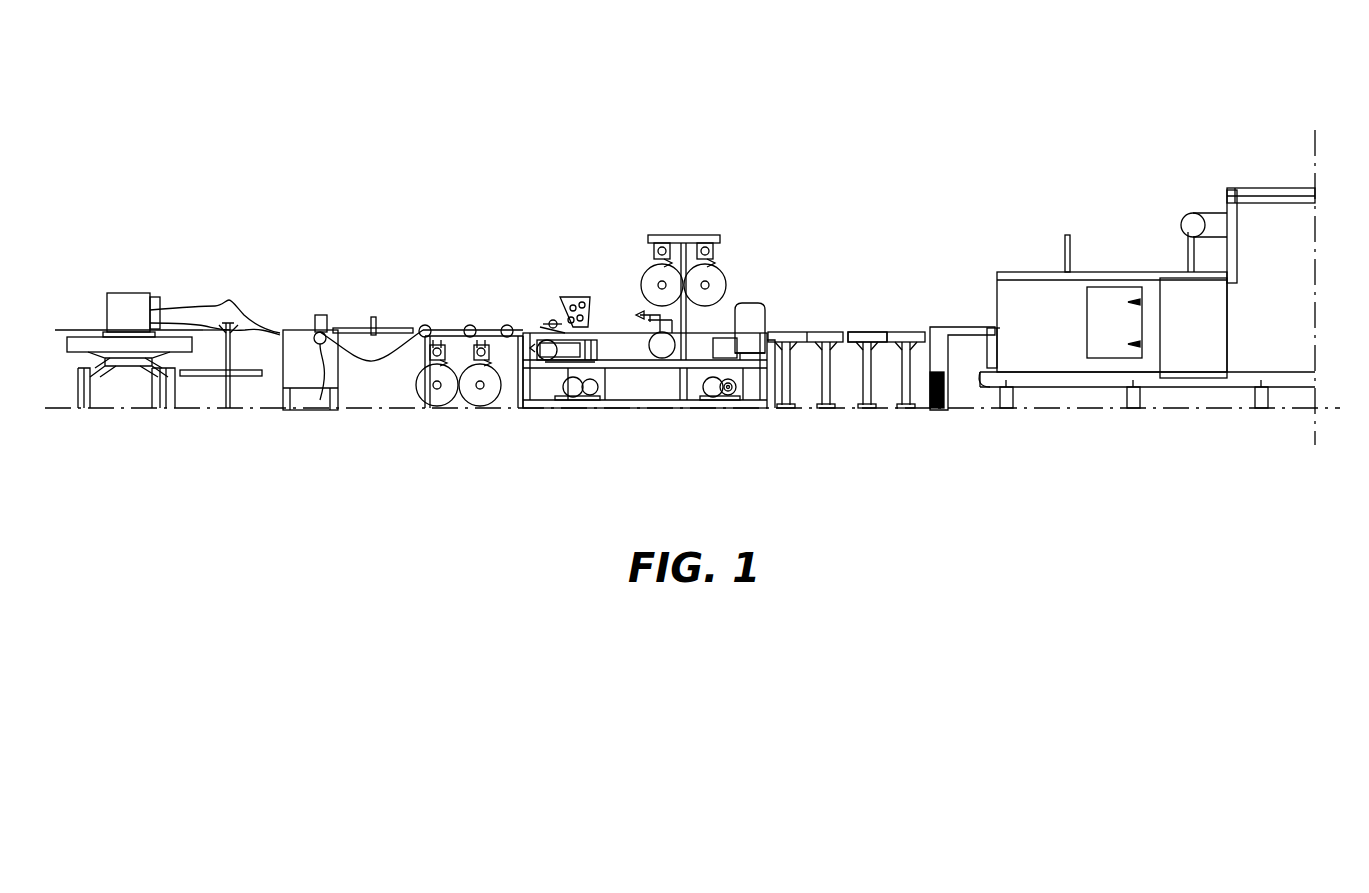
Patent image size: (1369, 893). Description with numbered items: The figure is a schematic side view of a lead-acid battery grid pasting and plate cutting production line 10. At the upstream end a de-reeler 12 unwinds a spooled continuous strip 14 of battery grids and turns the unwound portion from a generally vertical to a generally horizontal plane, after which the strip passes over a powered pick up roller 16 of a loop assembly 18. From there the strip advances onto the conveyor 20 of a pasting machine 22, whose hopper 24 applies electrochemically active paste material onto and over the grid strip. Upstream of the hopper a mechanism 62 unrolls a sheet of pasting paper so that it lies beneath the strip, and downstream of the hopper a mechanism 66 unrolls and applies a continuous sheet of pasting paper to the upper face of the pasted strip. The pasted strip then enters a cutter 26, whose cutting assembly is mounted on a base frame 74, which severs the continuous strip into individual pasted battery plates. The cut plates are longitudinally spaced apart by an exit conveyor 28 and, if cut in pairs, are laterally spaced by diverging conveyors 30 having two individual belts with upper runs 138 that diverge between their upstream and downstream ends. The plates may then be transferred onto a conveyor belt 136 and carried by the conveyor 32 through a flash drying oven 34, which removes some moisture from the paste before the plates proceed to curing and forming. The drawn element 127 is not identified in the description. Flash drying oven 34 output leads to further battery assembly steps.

The production line 10 is at (1220, 92).
The de-reeler 12 is at (130, 290).
The continuous strip 14 is at (193, 312).
The powered pick up roller 16 is at (320, 346).
The loop assembly 18 is at (358, 316).
The conveyor 20 is at (466, 356).
The pasting machine 22 is at (545, 316).
The hopper 24 is at (572, 298).
The cutter 26 is at (750, 302).
The exit conveyor 28 is at (790, 330).
The diverging conveyors 30 is at (900, 330).
The conveyor 32 is at (984, 328).
The flash drying oven 34 is at (1113, 270).
The mechanism 62 is at (472, 410).
The mechanism 66 is at (638, 262).
The base frame 74 is at (745, 412).
The support post 127 is at (687, 224).
The conveyor belt 136 is at (946, 330).
The upper runs 138 is at (857, 332).